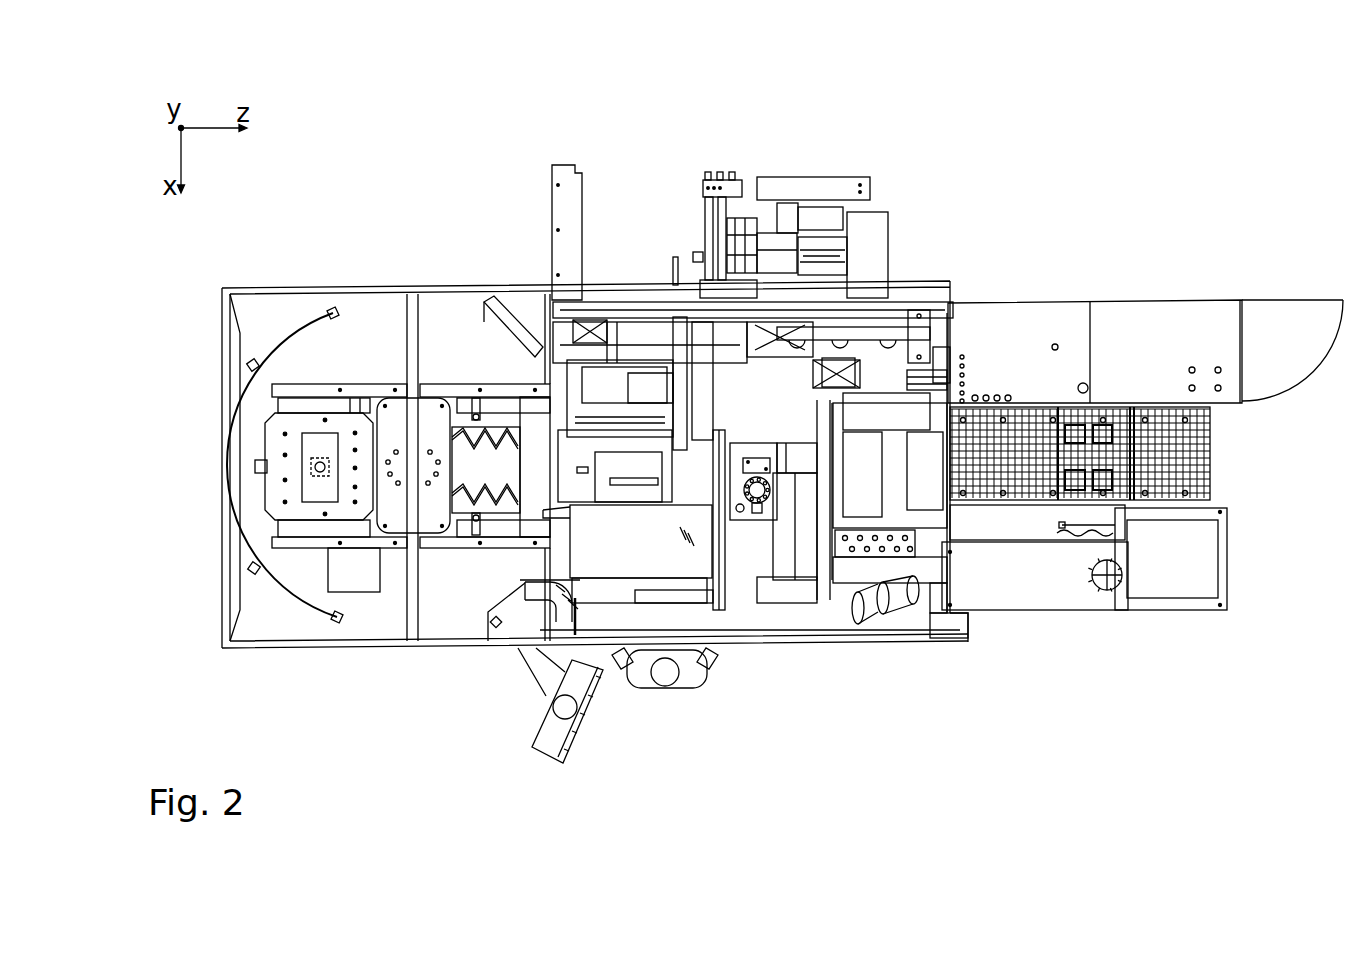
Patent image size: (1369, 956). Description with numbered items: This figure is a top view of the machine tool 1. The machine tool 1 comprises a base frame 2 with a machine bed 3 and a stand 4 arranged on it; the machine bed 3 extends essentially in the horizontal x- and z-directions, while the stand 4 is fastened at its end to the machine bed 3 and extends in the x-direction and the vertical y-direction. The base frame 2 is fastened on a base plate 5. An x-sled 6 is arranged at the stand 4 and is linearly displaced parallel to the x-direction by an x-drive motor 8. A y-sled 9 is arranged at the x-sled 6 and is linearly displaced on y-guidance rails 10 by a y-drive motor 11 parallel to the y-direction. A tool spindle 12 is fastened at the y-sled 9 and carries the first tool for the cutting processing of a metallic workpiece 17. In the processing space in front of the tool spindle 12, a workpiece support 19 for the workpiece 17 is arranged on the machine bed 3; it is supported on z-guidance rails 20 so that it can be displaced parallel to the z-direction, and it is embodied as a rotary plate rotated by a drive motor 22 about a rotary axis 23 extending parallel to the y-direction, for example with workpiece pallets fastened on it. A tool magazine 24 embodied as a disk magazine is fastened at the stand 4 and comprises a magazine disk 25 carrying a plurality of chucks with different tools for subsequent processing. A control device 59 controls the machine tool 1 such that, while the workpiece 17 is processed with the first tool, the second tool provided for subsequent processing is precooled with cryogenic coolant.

The machine tool 1 is at (705, 145).
The base frame 2 is at (426, 665).
The machine bed 3 is at (373, 637).
The stand 4 is at (862, 507).
The base plate 5 is at (773, 762).
The x-sled 6 is at (778, 395).
The x-drive motor 8 is at (858, 226).
The y-sled 9 is at (738, 513).
The y-guidance rails 10 is at (773, 445).
The y-drive motor 11 is at (755, 514).
The tool spindle 12 is at (712, 512).
The workpiece 17 is at (322, 495).
The workpiece support 19 is at (278, 480).
The z-guidance rails 20 is at (360, 543).
The drive motor 22 is at (316, 463).
The rotary axis 23 is at (308, 468).
The tool magazine 24 is at (672, 240).
The magazine disk 25 is at (655, 330).
The control device 59 is at (552, 732).